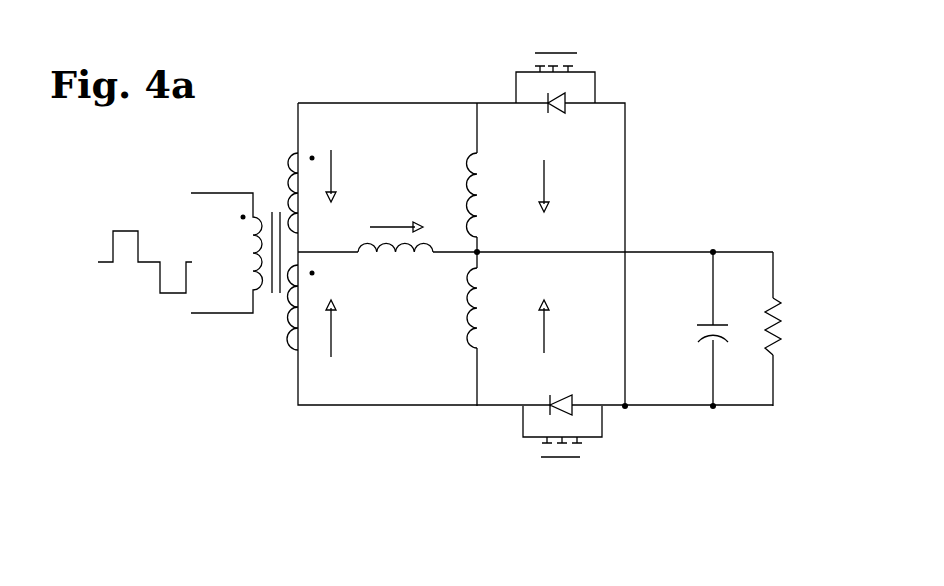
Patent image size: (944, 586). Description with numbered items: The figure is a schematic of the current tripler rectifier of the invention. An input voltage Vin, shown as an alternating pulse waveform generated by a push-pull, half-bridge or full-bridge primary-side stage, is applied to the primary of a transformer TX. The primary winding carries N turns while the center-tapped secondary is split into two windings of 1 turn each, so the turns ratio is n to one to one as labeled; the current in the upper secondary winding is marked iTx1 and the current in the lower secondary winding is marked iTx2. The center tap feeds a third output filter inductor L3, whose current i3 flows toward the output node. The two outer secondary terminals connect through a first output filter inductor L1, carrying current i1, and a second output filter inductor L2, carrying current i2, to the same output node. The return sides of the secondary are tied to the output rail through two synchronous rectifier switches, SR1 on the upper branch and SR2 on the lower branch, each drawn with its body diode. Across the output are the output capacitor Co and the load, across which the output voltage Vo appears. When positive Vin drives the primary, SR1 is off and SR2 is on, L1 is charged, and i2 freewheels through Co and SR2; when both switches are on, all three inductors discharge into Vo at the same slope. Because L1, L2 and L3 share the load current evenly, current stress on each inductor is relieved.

The input voltage Vin is at (129, 254).
The transformer TX is at (254, 255).
The transformer primary turns N is at (227, 253).
The transformer secondary turns 1 is at (302, 255).
The first transformer secondary current iTx1 is at (356, 176).
The second transformer secondary current iTx2 is at (356, 328).
The third output filter inductor L3 is at (395, 266).
The third inductor current i3 is at (397, 210).
The first output filter inductor L1 is at (491, 195).
The second output filter inductor L2 is at (491, 308).
The first inductor current i1 is at (559, 186).
The second inductor current i2 is at (559, 326).
The first synchronous rectifier switch SR1 is at (555, 66).
The second synchronous rectifier switch SR2 is at (562, 447).
The output capacitor Co is at (696, 329).
The output voltage Vo is at (790, 328).